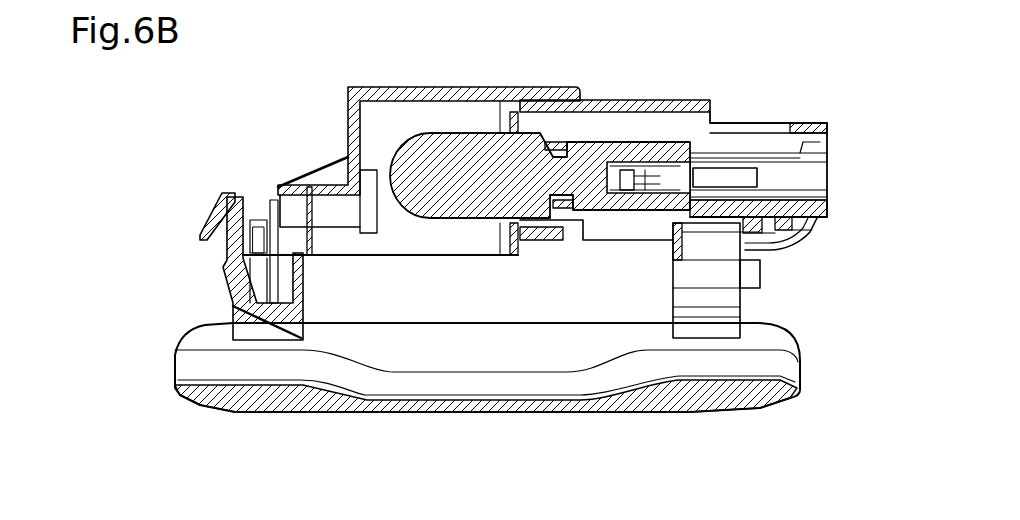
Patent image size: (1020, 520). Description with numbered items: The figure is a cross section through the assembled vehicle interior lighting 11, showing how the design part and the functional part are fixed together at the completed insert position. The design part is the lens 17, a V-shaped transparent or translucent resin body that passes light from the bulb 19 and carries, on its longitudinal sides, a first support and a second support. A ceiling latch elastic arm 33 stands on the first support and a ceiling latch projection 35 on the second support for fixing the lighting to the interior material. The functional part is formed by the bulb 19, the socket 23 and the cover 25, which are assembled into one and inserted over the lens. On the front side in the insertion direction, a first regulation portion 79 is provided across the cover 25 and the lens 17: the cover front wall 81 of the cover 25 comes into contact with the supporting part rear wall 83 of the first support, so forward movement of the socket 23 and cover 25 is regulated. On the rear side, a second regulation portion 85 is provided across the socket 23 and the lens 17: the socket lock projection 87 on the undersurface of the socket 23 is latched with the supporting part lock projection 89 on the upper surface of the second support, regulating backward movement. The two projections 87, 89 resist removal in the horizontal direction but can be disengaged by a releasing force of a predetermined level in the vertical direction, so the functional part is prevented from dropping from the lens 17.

The vehicle interior lighting 11 is at (282, 114).
The lens 17 is at (232, 418).
The bulb 19 is at (457, 132).
The socket 23 is at (757, 123).
The cover 25 is at (401, 85).
The ceiling latch elastic arm 33 is at (202, 240).
The ceiling latch projection 35 is at (797, 240).
The first regulation portion 79 is at (330, 248).
The cover front wall 81 is at (300, 255).
The supporting part rear wall 83 is at (305, 268).
The second regulation portion 85 is at (737, 246).
The socket lock projection 87 is at (800, 197).
The supporting part lock projection 89 is at (800, 197).